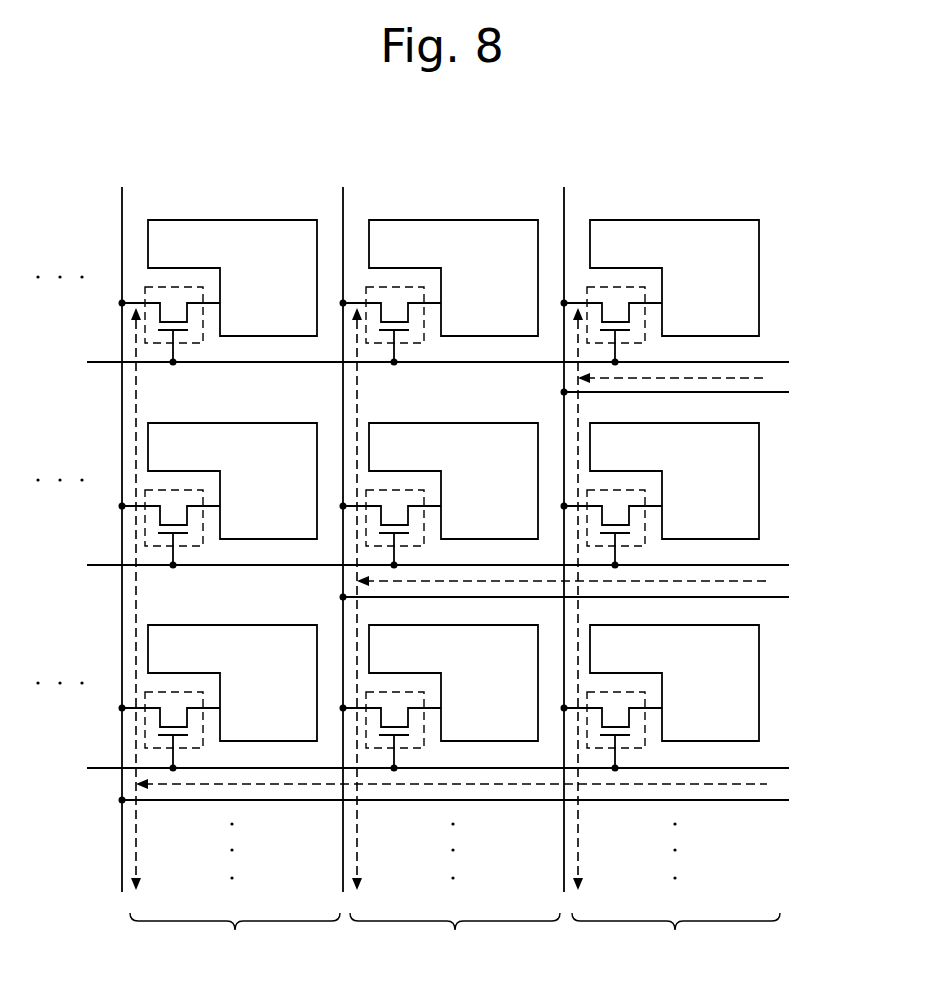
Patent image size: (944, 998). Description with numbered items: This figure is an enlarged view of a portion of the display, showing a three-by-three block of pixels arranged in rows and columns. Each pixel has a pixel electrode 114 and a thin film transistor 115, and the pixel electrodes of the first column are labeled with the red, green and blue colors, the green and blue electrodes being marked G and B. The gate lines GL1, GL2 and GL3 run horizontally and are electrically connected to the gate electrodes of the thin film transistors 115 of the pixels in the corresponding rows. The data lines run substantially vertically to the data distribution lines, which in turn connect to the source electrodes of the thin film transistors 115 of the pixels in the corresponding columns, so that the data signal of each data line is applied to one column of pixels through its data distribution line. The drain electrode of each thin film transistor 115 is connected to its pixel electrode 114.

The pixel electrode 114 is at (692, 220).
The thin film transistor 115 is at (178, 288).
The gate line GL1 is at (416, 362).
The gate line GL2 is at (416, 565).
The gate line GL3 is at (416, 768).
The green pixel electrode G is at (661, 481).
The blue pixel electrode B is at (661, 683).